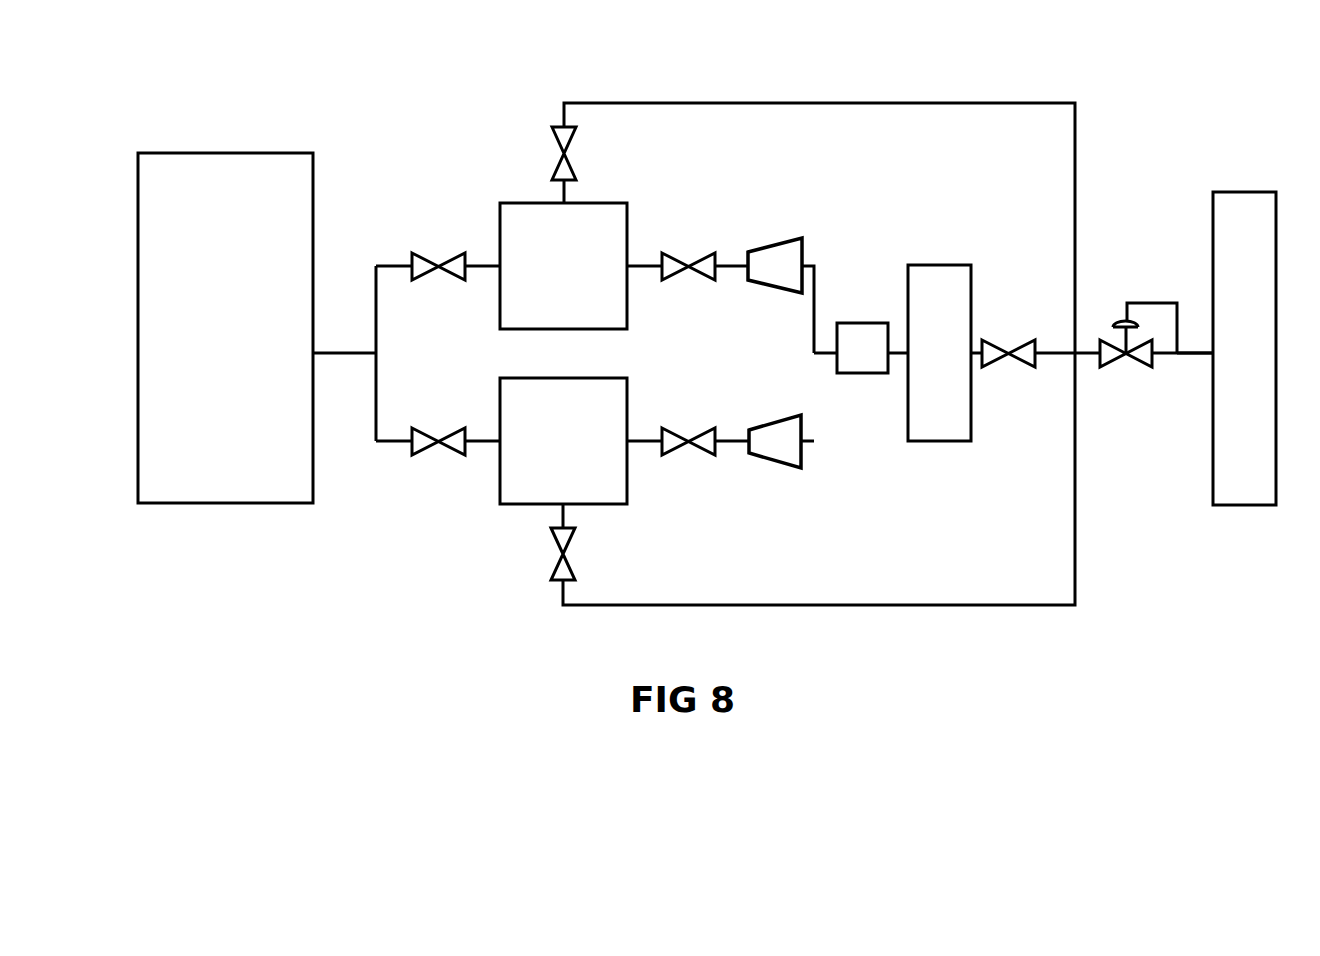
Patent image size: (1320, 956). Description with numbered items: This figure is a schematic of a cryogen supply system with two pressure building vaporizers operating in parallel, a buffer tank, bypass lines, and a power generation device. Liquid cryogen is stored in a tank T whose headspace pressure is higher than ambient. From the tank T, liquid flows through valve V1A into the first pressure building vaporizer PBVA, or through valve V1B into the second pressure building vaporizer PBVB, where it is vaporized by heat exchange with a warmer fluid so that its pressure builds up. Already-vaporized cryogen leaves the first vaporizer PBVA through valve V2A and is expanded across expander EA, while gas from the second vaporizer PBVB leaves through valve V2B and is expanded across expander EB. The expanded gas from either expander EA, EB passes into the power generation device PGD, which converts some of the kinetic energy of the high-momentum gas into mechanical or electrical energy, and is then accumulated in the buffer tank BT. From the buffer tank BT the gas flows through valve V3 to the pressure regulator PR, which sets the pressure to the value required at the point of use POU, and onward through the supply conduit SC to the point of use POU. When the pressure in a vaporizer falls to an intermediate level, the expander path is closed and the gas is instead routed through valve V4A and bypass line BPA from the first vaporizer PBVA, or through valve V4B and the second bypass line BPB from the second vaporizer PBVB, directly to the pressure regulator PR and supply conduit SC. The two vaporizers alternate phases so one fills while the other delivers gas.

The tank T is at (220, 183).
The valve V1A is at (427, 263).
The first pressure building vaporizer PBVA is at (520, 223).
The valve V4A is at (568, 143).
The valve V2A is at (695, 267).
The expander EA is at (775, 258).
The power generation device PGD is at (880, 323).
The buffer tank BT is at (940, 292).
The valve V3 is at (1005, 350).
The pressure regulator PR is at (1128, 275).
The supply conduit SC is at (1187, 353).
The point of use POU is at (1233, 220).
The bypass line BPA is at (885, 102).
The second bypass line BPB is at (993, 605).
The valve V1B is at (423, 450).
The second pressure building vaporizer PBVB is at (513, 468).
The valve V4B is at (563, 552).
The valve V2B is at (682, 452).
The expander EB is at (780, 442).